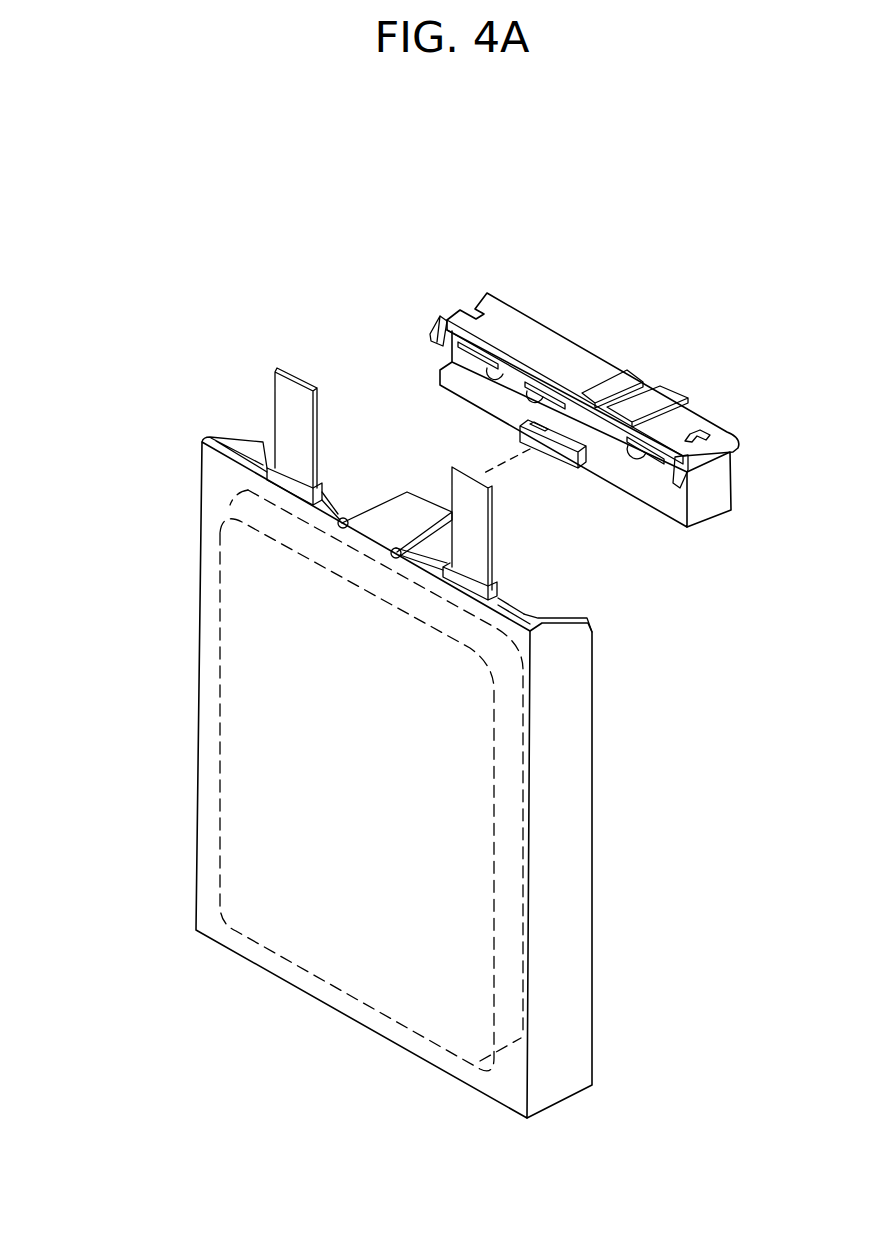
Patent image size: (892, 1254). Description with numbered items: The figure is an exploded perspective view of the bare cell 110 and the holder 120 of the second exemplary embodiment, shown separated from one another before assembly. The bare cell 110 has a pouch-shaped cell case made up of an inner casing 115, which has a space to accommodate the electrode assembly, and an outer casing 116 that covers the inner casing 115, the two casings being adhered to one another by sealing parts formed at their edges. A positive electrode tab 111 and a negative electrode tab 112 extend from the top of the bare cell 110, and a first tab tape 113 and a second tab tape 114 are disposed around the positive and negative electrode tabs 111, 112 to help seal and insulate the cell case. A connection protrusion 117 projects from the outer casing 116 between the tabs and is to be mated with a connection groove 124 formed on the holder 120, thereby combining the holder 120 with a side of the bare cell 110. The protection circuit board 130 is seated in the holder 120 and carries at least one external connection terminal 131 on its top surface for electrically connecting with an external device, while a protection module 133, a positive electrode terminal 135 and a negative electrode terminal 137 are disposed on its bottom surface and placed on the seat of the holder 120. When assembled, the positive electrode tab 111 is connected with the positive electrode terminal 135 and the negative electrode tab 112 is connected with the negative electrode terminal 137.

The bare cell 110 is at (174, 482).
The positive electrode tab 111 is at (296, 396).
The negative electrode tab 112 is at (478, 527).
The first tab tape 113 is at (320, 493).
The second tab tape 114 is at (496, 595).
The inner casing 115 is at (522, 602).
The outer casing 116 is at (205, 516).
The connection protrusion 117 is at (400, 502).
The holder 120 is at (440, 283).
The connection groove 124 is at (544, 450).
The protection circuit board 130 is at (537, 343).
The external connection terminal 131 is at (623, 380).
The protection module 133 is at (553, 390).
The positive electrode terminal 135 is at (517, 365).
The negative electrode terminal 137 is at (635, 426).